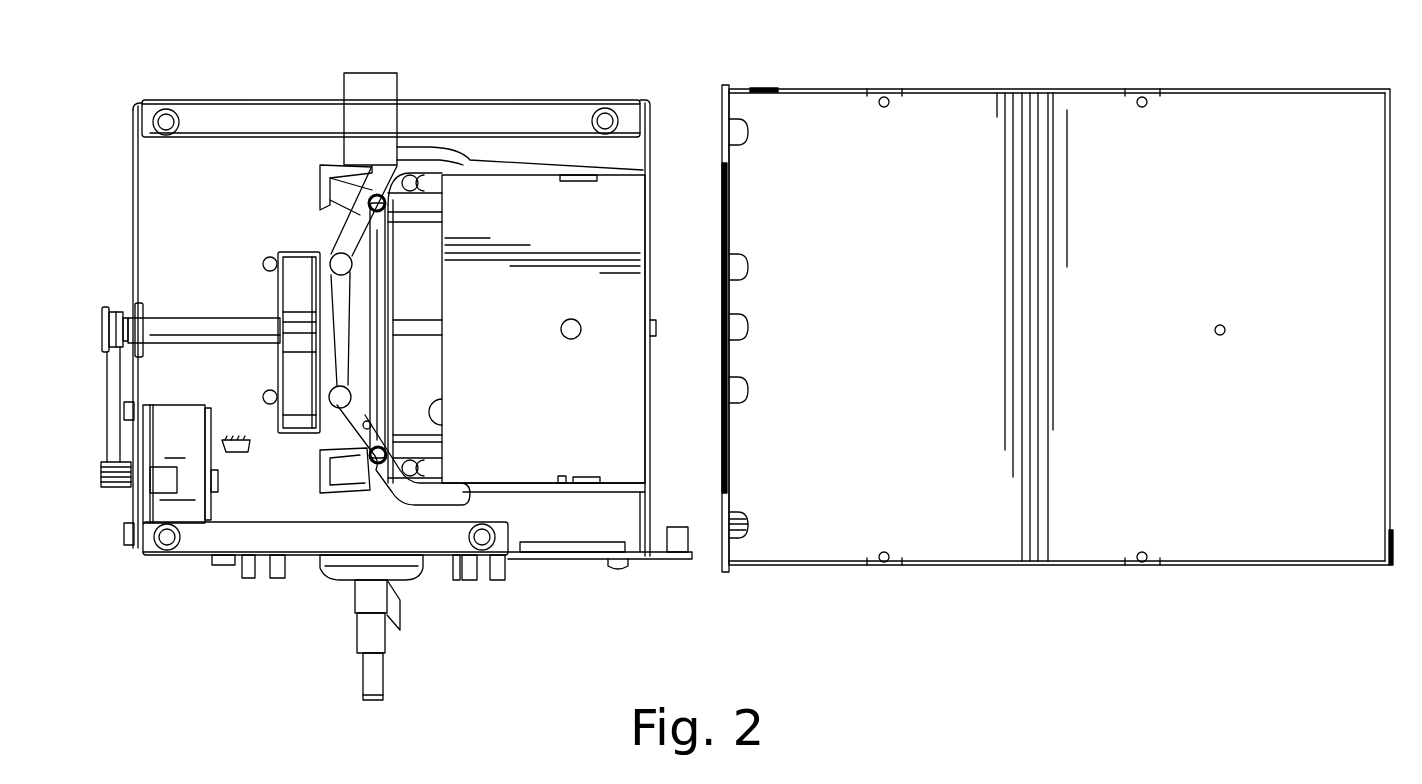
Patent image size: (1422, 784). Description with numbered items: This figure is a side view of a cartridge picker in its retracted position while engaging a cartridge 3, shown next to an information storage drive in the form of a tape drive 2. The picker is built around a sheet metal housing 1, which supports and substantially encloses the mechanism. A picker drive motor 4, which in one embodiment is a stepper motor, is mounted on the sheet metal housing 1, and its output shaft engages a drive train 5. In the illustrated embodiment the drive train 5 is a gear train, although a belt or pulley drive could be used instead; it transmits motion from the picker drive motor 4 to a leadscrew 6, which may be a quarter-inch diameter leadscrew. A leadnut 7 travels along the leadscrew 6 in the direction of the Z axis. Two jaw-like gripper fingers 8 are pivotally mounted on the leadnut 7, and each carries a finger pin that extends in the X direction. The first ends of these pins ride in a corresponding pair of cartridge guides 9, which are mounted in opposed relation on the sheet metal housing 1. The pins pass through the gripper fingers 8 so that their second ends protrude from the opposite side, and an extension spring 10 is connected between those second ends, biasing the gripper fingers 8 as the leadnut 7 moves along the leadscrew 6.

The sheet metal housing 1 is at (552, 97).
The tape drive 2 is at (983, 566).
The cartridge 3 is at (613, 406).
The picker drive motor 4 is at (190, 507).
The drive train 5 is at (110, 440).
The leadscrew 6 is at (205, 323).
The leadnut 7 is at (300, 252).
The gripper fingers 8 is at (425, 160).
The cartridge guides 9 is at (627, 167).
The extension spring 10 is at (377, 407).